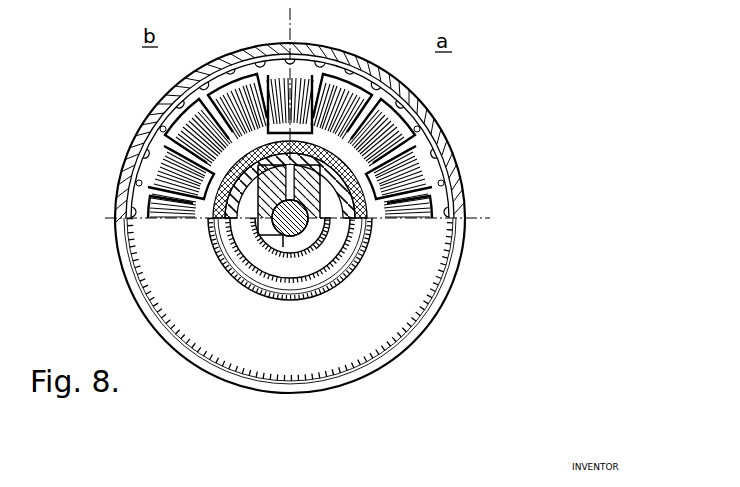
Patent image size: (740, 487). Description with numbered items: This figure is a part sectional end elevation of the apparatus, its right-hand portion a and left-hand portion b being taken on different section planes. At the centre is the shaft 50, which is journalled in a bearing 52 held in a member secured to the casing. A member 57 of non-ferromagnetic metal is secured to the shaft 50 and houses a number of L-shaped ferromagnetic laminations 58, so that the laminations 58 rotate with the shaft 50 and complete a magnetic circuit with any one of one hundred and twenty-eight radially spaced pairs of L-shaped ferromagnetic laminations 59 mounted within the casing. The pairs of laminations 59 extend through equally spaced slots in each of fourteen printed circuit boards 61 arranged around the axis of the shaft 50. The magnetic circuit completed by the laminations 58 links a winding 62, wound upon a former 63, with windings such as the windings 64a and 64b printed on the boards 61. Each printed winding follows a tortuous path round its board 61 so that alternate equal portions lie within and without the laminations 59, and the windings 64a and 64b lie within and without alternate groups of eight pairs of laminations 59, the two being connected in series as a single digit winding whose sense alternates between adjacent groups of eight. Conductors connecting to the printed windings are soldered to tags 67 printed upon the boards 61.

The shaft 50 is at (287, 226).
The bearing 52 is at (420, 327).
The member 57 is at (276, 200).
The L-shaped ferromagnetic laminations 58 is at (288, 205).
The L-shaped ferromagnetic laminations 59 is at (300, 62).
The printed circuit boards 61 is at (221, 83).
The winding 62 is at (370, 220).
The former 63 is at (220, 212).
The winding 64a is at (393, 107).
The winding 64b is at (183, 126).
The tags 67 is at (420, 129).